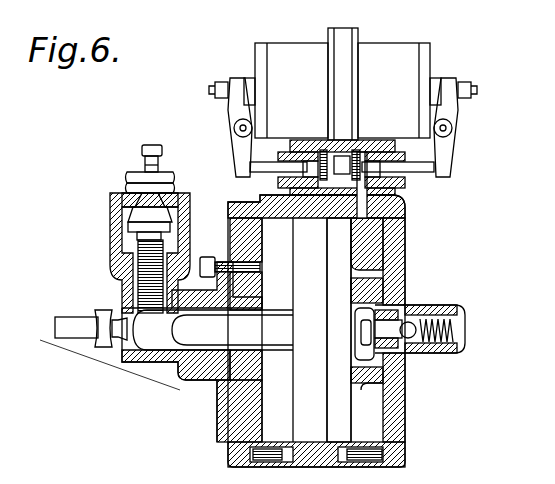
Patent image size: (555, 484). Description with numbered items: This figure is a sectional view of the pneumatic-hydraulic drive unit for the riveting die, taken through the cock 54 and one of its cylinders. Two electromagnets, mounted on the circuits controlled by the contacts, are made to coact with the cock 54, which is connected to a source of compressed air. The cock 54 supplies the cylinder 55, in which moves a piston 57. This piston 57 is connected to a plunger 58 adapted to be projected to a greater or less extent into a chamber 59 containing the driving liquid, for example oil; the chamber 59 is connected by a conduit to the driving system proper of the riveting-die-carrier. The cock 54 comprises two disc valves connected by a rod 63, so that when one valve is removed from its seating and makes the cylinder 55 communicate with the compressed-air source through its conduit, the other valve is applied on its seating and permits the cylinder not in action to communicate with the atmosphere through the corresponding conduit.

The cock 54 is at (342, 138).
The cylinder 55 is at (395, 263).
The piston 57 is at (342, 402).
The plunger 58 is at (207, 340).
The chamber 59 is at (148, 340).
The rod 63 is at (348, 202).